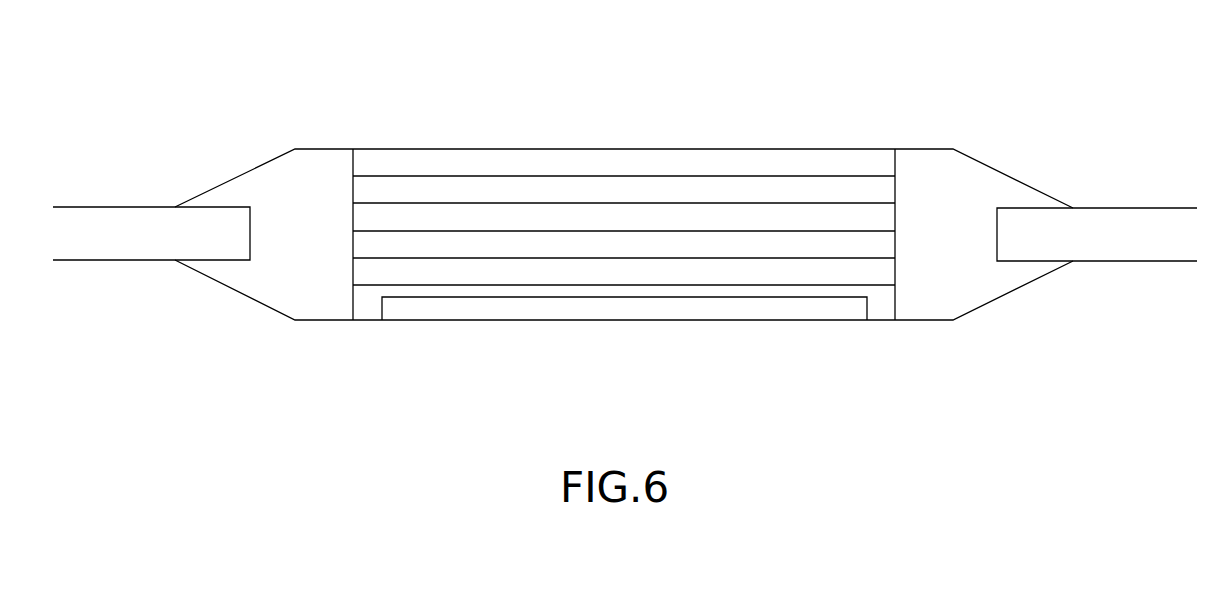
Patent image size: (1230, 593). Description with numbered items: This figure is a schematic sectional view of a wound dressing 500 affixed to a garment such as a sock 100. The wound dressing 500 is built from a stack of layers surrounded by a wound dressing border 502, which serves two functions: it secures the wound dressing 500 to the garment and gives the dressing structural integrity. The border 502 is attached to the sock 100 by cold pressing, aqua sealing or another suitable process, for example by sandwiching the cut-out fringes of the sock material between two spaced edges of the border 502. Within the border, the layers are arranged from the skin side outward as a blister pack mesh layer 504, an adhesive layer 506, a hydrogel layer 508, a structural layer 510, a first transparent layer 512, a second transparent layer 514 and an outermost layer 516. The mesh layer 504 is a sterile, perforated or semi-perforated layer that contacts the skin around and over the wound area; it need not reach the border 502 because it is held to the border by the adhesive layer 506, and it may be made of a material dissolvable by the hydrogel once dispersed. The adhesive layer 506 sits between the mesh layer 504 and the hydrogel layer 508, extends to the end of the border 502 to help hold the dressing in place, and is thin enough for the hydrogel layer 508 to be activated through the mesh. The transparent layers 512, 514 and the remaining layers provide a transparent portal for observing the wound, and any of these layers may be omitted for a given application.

The sock 100 is at (120, 218).
The wound dressing 500 is at (623, 130).
The wound dressing border 502 is at (317, 300).
The blister pack mesh layer 504 is at (620, 310).
The adhesive layer 506 is at (880, 307).
The hydrogel layer 508 is at (863, 275).
The structural layer 510 is at (813, 248).
The first transparent layer 512 is at (775, 218).
The second transparent layer 514 is at (725, 192).
The outermost layer 516 is at (680, 158).